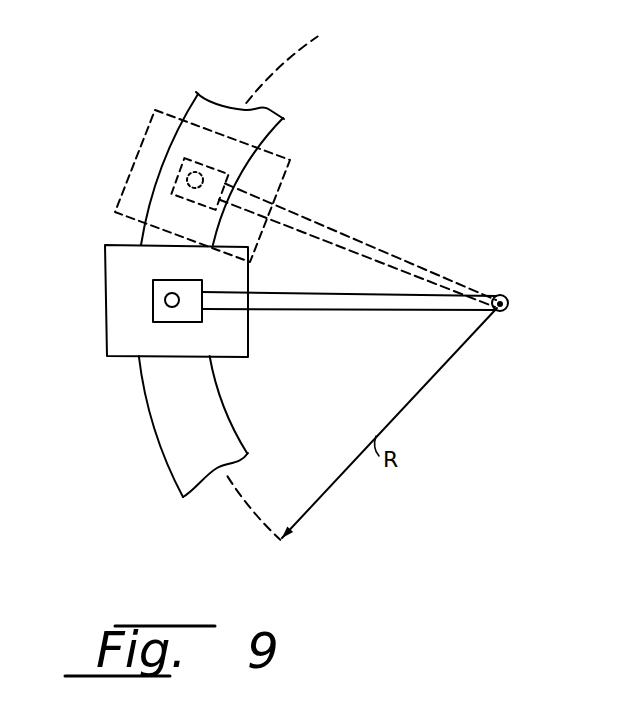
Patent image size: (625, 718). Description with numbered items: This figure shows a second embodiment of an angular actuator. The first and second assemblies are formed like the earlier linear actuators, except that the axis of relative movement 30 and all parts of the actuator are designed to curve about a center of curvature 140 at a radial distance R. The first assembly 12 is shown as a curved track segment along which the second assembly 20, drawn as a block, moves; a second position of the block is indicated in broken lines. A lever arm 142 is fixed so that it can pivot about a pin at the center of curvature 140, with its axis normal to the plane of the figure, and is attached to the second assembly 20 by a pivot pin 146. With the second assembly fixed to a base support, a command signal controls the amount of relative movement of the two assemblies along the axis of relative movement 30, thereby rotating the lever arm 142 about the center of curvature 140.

The first assembly 12 is at (227, 408).
The second assembly 20 is at (134, 152).
The axis of relative movement 30 is at (249, 507).
The center of curvature 140 is at (505, 293).
The lever arm 142 is at (368, 240).
The pivot pin 146 is at (165, 300).